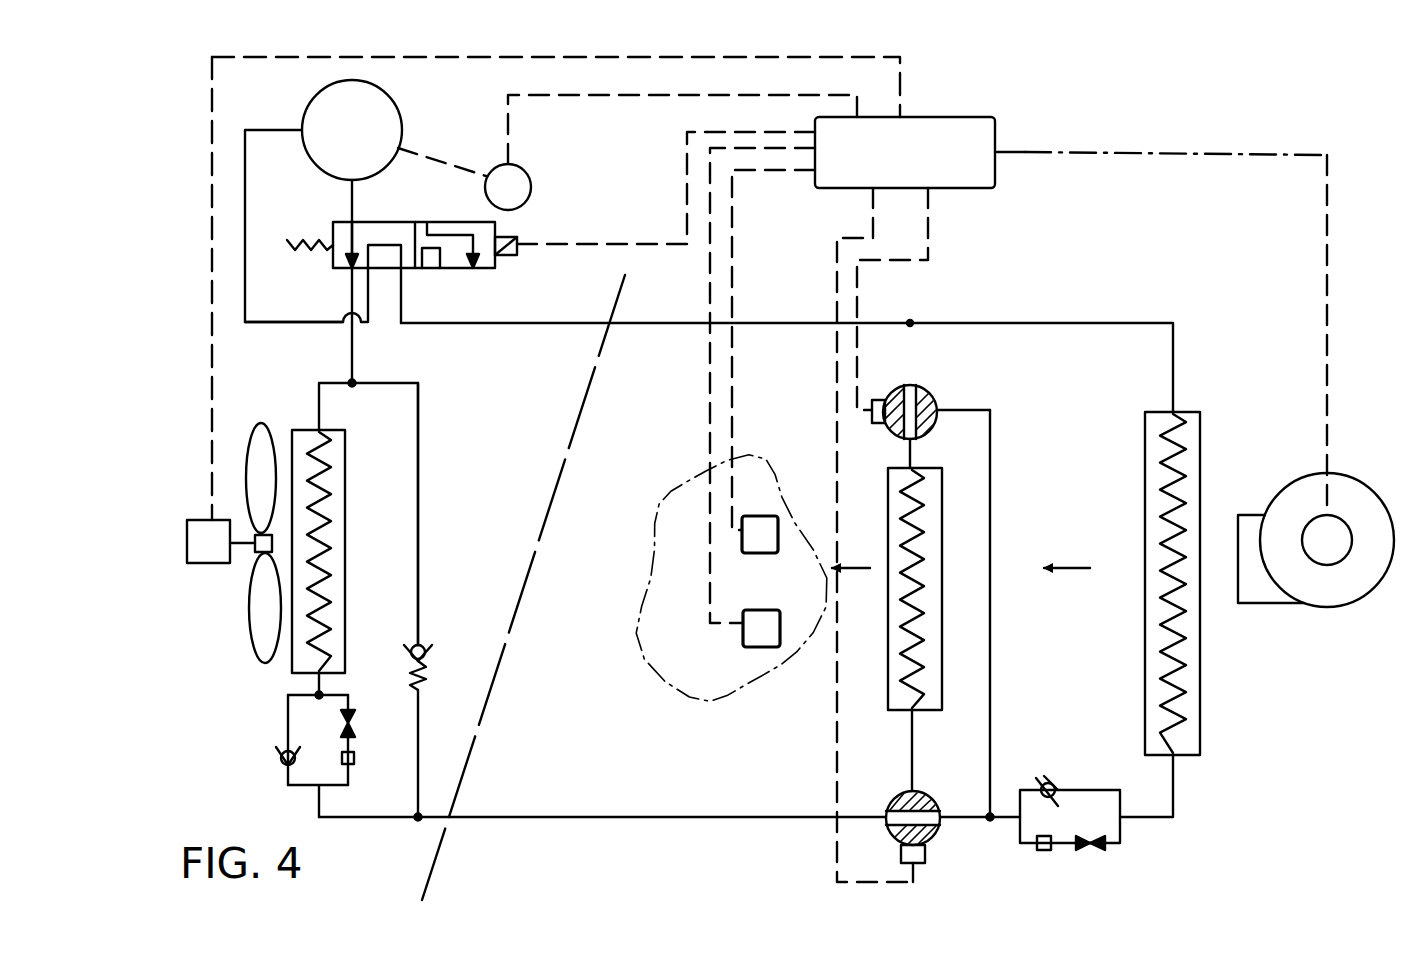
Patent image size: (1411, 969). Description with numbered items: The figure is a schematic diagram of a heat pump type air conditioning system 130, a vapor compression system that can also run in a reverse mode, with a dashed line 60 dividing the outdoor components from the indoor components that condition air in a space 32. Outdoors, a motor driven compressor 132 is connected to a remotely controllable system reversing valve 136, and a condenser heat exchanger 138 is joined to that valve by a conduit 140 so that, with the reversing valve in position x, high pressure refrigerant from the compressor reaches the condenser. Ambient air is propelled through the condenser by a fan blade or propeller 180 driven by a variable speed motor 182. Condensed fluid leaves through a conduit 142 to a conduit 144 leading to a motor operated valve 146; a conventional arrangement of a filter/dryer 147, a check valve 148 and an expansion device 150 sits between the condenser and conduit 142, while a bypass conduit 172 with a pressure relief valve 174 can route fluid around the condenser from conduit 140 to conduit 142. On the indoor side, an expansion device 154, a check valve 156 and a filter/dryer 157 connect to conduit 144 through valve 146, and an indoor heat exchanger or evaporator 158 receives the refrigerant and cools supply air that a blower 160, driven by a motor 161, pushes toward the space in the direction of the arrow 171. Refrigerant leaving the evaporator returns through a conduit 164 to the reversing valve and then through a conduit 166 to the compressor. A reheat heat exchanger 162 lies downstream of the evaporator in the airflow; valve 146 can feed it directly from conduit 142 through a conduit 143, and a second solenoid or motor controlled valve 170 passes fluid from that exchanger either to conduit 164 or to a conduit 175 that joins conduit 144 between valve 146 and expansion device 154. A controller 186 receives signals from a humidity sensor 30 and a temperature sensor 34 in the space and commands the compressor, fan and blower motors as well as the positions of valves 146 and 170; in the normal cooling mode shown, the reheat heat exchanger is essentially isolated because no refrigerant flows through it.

The air conditioning system 130 is at (1162, 116).
The motor driven compressor 132 is at (430, 106).
The system reversing valve 136 is at (385, 222).
The condenser heat exchanger 138 is at (345, 450).
The conduit 140 is at (318, 403).
The conduit 142 is at (352, 820).
The conduit 143 is at (913, 757).
The conduit 144 is at (590, 817).
The motor operated valve 146 is at (935, 835).
The filter/dryer 147 is at (354, 760).
The check valve 148 is at (280, 756).
The expansion device 150 is at (355, 722).
The expansion device 154 is at (1100, 845).
The check valve 156 is at (1050, 785).
The filter/dryer 157 is at (1035, 848).
The indoor heat exchanger or evaporator 158 is at (1200, 700).
The blower 160 is at (1350, 607).
The blower motor 161 is at (1312, 520).
The reheat heat exchanger 162 is at (963, 462).
The conduit 164 is at (1118, 323).
The conduit 166 is at (265, 322).
The solenoid or motor controlled valve 170 is at (935, 395).
The arrow 171 is at (858, 568).
The bypass conduit 172 is at (418, 545).
The pressure relief valve 174 is at (418, 645).
The conduit 175 is at (990, 490).
The fan blade or propeller 180 is at (250, 625).
The variable speed motor 182 is at (200, 562).
The controller 186 is at (965, 117).
The humidity sensor 30 is at (755, 610).
The space 32 is at (705, 668).
The temperature sensor 34 is at (748, 516).
The dashed line 60 is at (478, 742).